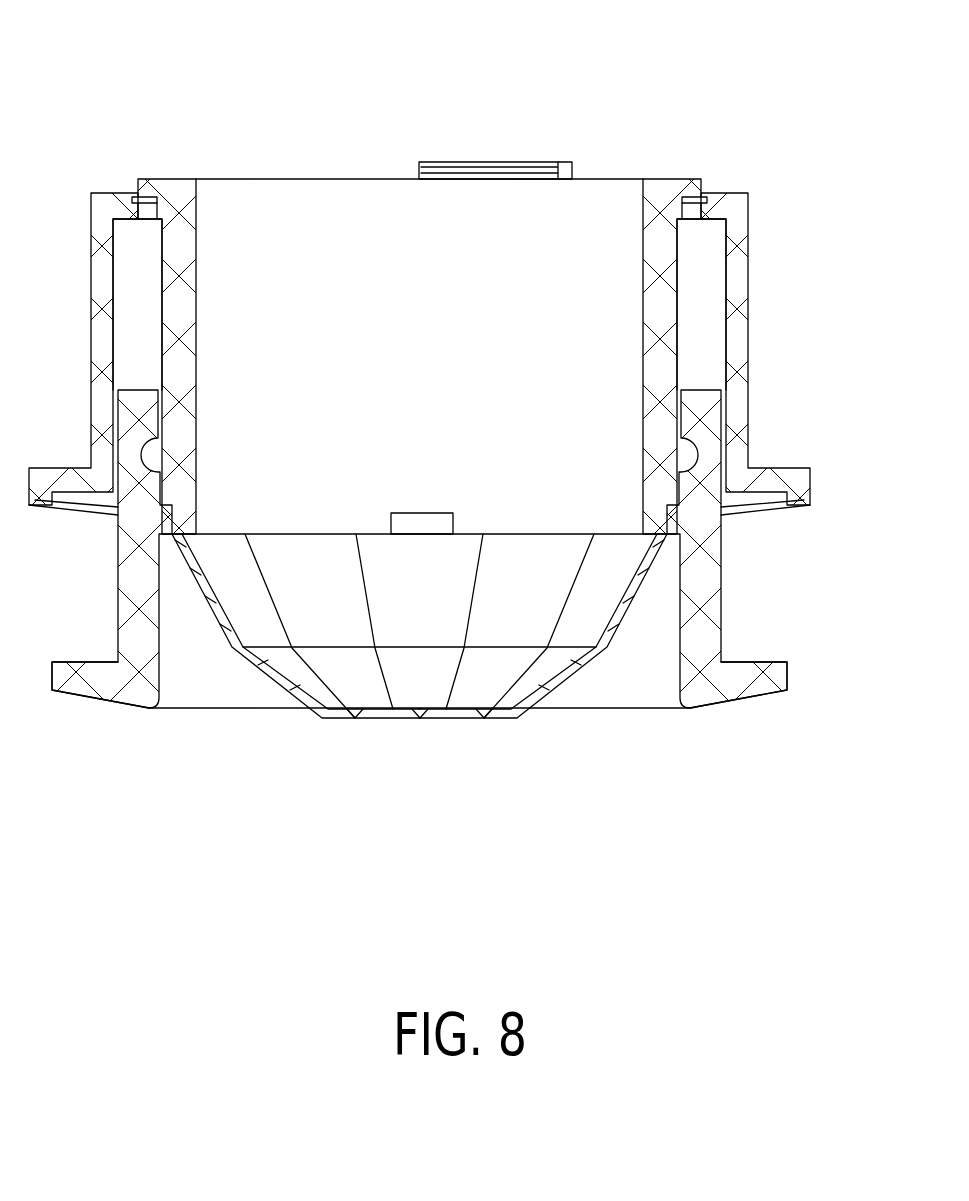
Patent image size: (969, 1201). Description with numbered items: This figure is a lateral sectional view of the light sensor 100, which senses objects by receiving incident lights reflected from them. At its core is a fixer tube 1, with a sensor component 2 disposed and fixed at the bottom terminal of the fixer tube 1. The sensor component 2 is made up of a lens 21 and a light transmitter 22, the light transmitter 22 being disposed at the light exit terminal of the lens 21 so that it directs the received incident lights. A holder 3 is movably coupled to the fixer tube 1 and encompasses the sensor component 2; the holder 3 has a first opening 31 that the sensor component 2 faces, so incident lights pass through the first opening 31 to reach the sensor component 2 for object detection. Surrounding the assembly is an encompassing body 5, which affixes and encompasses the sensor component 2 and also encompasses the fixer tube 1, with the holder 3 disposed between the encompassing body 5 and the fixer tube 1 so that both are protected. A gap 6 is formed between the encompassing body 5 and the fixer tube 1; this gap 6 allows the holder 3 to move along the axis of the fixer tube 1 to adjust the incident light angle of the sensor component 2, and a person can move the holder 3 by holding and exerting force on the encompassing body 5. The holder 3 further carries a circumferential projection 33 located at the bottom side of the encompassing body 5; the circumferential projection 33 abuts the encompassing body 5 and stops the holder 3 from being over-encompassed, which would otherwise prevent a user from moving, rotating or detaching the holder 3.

The light sensor 100 is at (450, 455).
The fixer tube 1 is at (660, 313).
The gap 6 is at (698, 333).
The encompassing body 5 is at (750, 387).
The holder 3 is at (457, 614).
The circumferential projection 33 is at (787, 680).
The first opening 31 is at (570, 709).
The sensor component 2 is at (419, 709).
The lens 21 is at (415, 628).
The light transmitter 22 is at (392, 525).